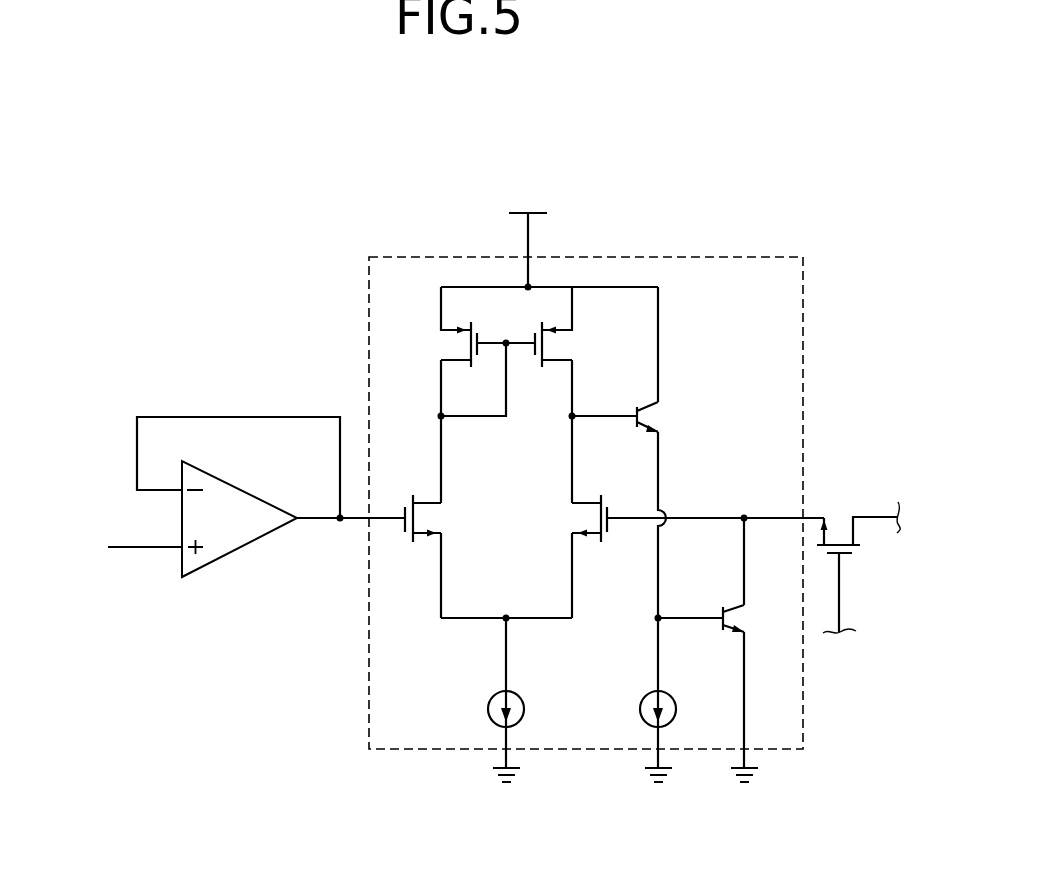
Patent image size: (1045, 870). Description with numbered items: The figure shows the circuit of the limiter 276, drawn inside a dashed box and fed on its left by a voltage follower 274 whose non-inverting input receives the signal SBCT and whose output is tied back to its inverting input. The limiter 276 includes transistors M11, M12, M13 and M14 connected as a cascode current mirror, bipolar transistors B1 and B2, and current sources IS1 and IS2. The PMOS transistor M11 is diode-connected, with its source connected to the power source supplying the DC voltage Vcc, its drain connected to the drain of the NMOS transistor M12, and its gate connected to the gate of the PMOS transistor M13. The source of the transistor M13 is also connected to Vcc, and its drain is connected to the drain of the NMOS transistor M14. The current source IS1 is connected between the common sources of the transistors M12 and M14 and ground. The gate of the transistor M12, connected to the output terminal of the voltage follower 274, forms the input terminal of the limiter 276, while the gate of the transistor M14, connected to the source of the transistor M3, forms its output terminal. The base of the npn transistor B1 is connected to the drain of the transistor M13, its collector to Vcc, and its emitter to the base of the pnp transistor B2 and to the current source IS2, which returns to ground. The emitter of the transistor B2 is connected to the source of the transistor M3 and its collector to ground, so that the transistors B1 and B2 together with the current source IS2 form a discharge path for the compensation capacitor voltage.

The voltage follower 274 is at (243, 549).
The limiter 276 is at (683, 257).
The transistor M11 is at (469, 395).
The transistor M12 is at (444, 556).
The transistor M13 is at (572, 395).
The transistor M14 is at (678, 556).
The transistor M3 is at (858, 562).
The transistor B1 is at (630, 359).
The transistor B2 is at (717, 650).
The current source IS1 is at (525, 700).
The current source IS2 is at (676, 736).
The DC voltage Vcc is at (528, 236).
The control signal input SBCT is at (114, 542).